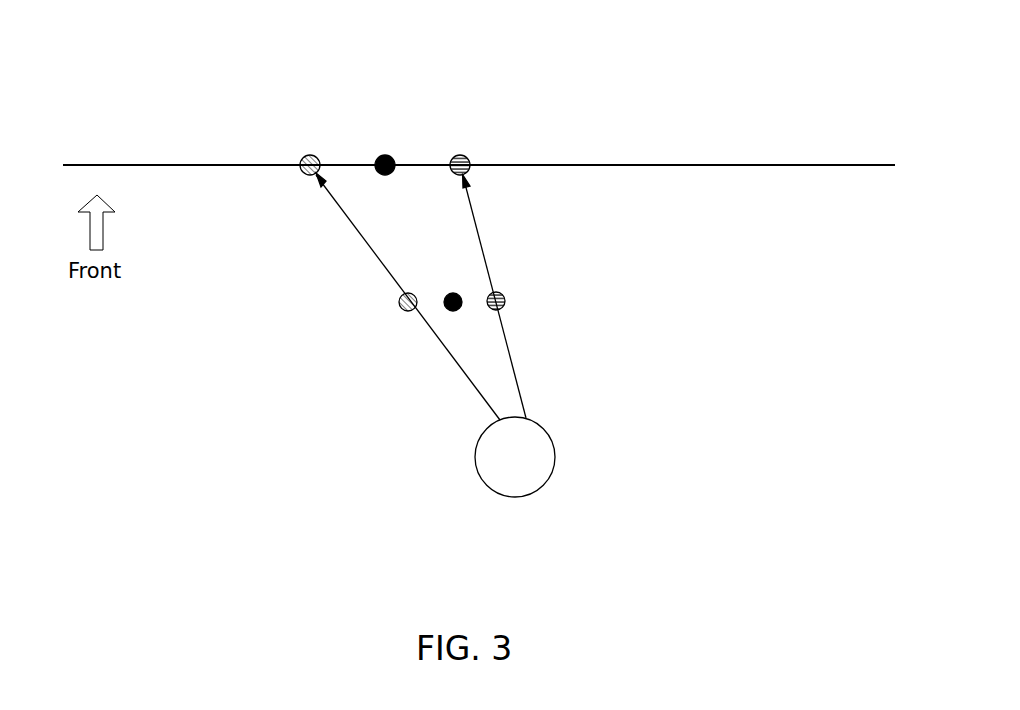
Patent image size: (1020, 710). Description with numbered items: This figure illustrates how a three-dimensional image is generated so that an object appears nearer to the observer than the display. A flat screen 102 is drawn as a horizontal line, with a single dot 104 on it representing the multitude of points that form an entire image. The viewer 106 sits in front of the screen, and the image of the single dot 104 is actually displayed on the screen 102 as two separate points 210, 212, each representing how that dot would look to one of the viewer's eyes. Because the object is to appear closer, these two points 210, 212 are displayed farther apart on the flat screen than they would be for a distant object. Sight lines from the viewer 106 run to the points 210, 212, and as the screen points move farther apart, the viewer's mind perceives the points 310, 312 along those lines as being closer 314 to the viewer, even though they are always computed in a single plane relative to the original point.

The flat screen 102 is at (862, 166).
The single dot 104 is at (385, 156).
The viewer 106 is at (555, 456).
The separate point 210 is at (308, 156).
The separate point 212 is at (462, 157).
The perceived point 310 is at (398, 302).
The perceived point 312 is at (507, 300).
The closer perceived position 314 is at (454, 293).